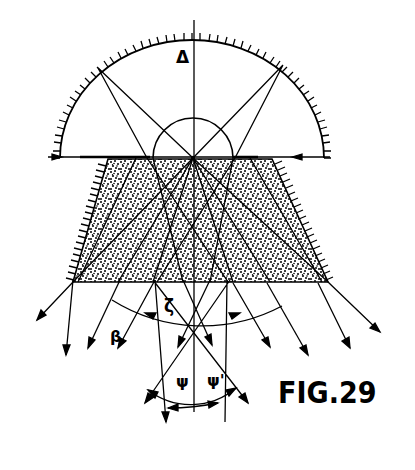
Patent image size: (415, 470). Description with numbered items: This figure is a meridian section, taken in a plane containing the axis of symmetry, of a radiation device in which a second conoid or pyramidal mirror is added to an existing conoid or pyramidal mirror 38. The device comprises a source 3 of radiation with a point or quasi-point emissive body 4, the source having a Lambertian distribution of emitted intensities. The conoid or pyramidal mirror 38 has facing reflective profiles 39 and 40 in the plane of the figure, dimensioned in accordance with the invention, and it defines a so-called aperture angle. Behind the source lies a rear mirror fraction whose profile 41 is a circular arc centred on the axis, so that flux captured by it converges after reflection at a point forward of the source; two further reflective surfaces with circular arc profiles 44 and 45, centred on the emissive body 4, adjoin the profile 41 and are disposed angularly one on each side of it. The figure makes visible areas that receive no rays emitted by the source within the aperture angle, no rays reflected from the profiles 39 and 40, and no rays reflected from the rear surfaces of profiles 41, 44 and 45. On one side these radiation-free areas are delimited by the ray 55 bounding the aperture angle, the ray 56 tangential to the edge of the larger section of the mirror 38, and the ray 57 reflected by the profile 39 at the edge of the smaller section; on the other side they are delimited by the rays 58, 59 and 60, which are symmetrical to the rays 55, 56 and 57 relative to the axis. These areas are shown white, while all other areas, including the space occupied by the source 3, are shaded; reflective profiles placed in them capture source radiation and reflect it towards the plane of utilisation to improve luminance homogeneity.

The source 3 is at (198, 142).
The emissive body 4 is at (190, 135).
The conoid or pyramidal mirror 38 is at (297, 195).
The profile 39 is at (310, 221).
The profile 40 is at (83, 218).
The profile of rear mirror fraction 41 is at (160, 42).
The circular arc profile of reflective surface 44 is at (60, 115).
The circular arc profile of reflective surface 45 is at (323, 98).
The ray 55 is at (292, 314).
The ray 56 is at (352, 312).
The ray 57 is at (250, 157).
The ray 58 is at (110, 313).
The ray 59 is at (43, 302).
The ray 60 is at (130, 157).